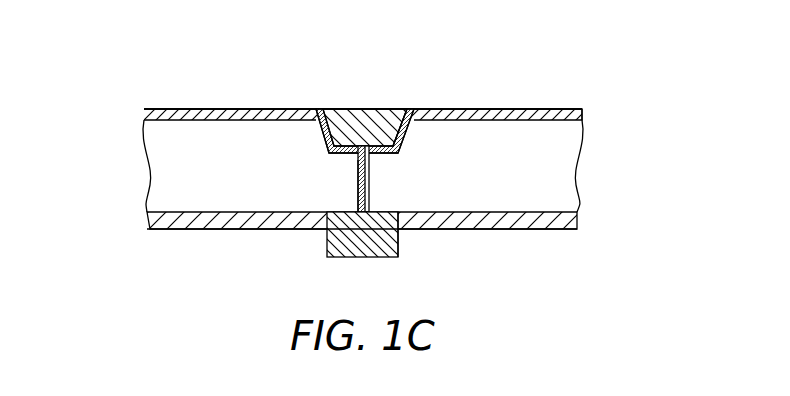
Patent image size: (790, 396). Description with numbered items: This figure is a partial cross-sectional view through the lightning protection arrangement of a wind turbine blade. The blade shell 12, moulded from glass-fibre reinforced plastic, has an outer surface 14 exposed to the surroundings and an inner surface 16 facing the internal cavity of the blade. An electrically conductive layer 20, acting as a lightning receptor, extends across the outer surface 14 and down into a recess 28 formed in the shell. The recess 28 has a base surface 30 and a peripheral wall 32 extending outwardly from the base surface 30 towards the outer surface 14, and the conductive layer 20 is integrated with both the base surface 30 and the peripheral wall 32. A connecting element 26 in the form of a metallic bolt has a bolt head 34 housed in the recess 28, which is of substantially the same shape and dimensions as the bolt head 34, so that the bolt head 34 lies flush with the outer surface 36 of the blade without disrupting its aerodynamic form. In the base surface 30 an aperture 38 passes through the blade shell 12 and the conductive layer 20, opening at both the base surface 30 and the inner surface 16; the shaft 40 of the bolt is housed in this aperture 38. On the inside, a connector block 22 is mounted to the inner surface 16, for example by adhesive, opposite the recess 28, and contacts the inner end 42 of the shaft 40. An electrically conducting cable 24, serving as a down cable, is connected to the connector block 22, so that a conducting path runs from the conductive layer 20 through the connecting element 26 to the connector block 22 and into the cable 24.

The blade shell 12 is at (193, 70).
The outer surface 14 is at (558, 108).
The inner surface 16 is at (236, 212).
The electrically conductive layer 20 is at (483, 108).
The connector block 22 is at (347, 259).
The electrically conducting cable 24 is at (520, 222).
The connecting element 26 is at (372, 115).
The recess 28 is at (398, 99).
The base surface 30 is at (377, 152).
The peripheral wall 32 is at (322, 132).
The bolt head 34 is at (338, 117).
The outer surface of the blade 36 is at (271, 99).
The aperture 38 is at (358, 173).
The shaft 40 is at (360, 196).
The inner end 42 is at (388, 258).